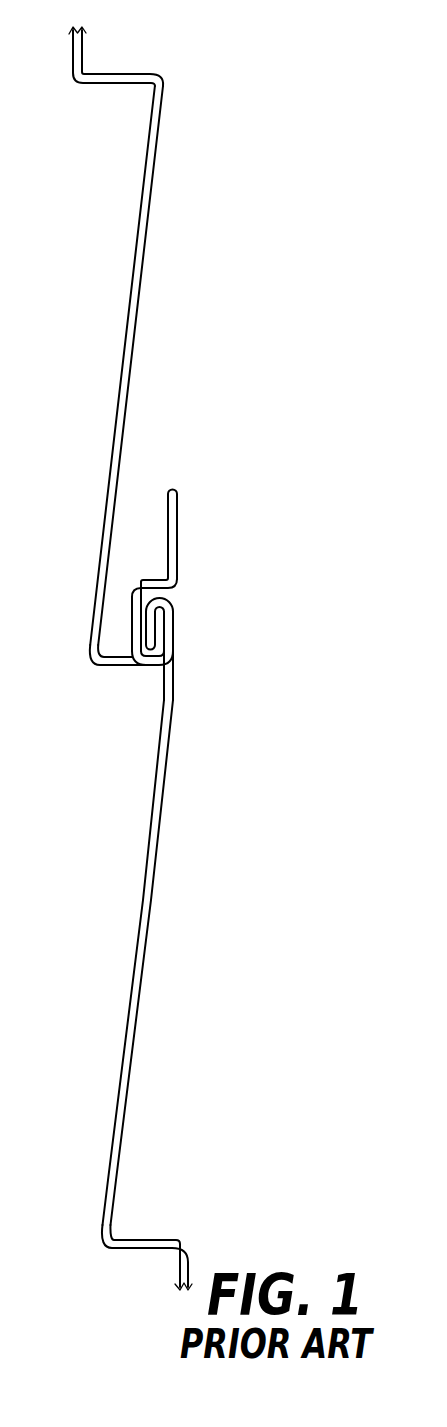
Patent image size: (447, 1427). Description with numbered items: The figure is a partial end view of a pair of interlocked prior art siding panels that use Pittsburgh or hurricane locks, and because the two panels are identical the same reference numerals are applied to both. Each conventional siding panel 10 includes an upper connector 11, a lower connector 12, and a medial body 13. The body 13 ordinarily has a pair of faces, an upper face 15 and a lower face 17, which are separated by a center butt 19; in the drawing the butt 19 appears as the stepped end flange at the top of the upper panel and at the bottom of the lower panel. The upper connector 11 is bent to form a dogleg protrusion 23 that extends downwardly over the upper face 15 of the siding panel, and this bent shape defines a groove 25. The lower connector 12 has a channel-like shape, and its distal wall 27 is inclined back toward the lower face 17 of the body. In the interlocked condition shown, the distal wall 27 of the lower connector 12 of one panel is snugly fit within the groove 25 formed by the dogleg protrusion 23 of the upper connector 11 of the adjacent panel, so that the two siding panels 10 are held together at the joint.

The siding panel 10 is at (154, 651).
The upper connector 11 is at (158, 578).
The lower connector 12 is at (100, 675).
The medial body 13 is at (172, 655).
The upper face 15 is at (133, 1027).
The lower face 17 is at (139, 282).
The center butt 19 is at (117, 74).
The dogleg protrusion 23 is at (137, 617).
The groove 25 is at (170, 606).
The distal wall 27 is at (169, 640).